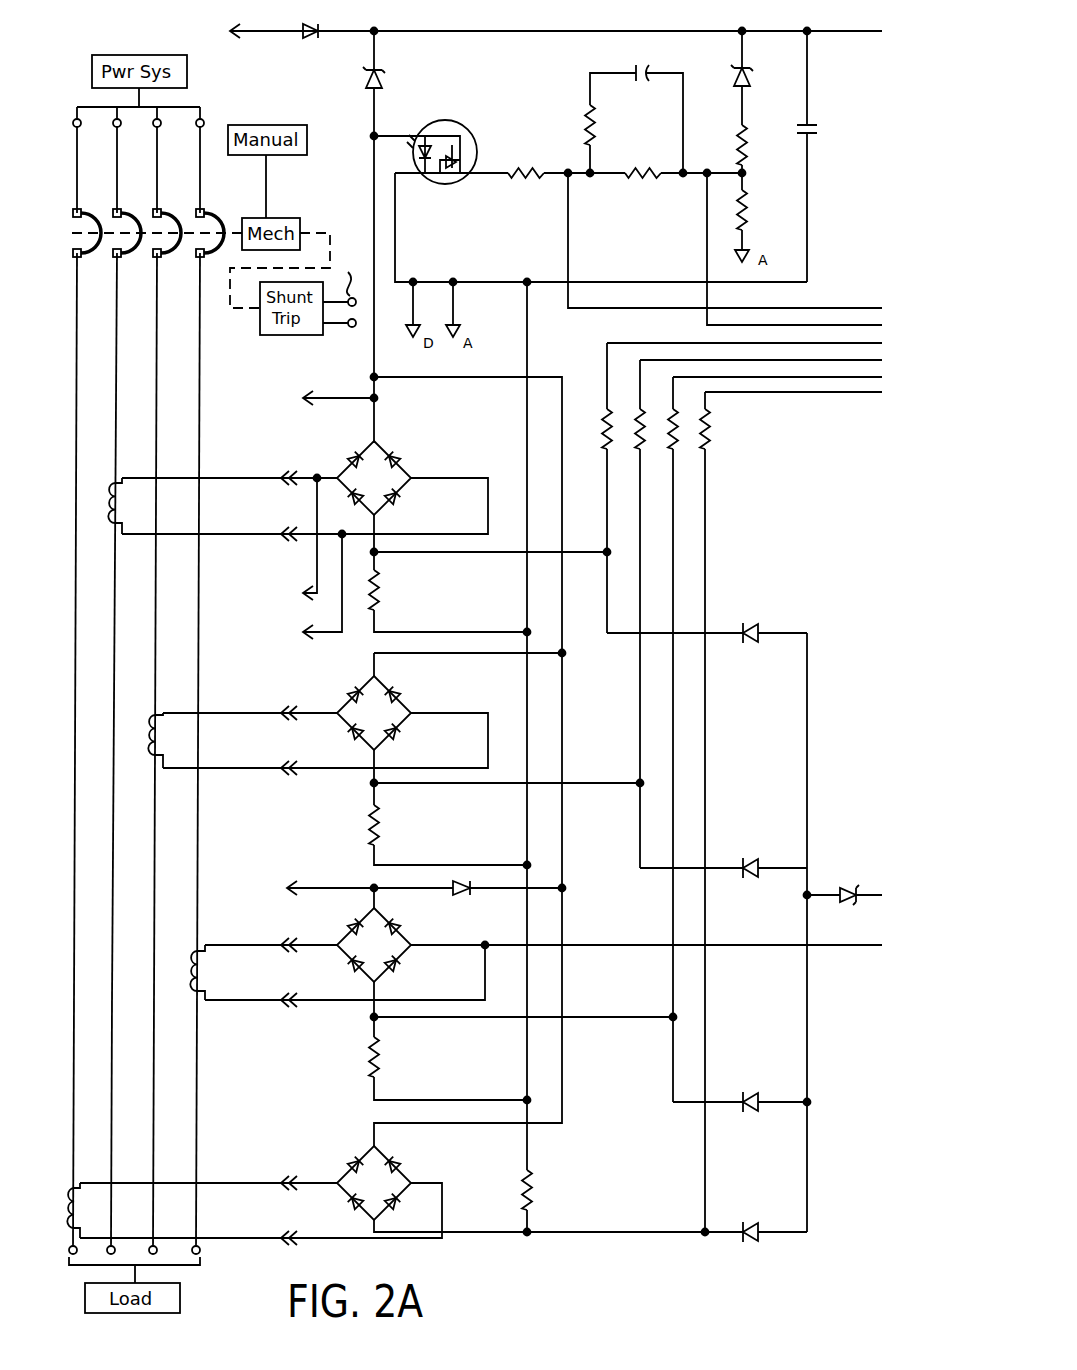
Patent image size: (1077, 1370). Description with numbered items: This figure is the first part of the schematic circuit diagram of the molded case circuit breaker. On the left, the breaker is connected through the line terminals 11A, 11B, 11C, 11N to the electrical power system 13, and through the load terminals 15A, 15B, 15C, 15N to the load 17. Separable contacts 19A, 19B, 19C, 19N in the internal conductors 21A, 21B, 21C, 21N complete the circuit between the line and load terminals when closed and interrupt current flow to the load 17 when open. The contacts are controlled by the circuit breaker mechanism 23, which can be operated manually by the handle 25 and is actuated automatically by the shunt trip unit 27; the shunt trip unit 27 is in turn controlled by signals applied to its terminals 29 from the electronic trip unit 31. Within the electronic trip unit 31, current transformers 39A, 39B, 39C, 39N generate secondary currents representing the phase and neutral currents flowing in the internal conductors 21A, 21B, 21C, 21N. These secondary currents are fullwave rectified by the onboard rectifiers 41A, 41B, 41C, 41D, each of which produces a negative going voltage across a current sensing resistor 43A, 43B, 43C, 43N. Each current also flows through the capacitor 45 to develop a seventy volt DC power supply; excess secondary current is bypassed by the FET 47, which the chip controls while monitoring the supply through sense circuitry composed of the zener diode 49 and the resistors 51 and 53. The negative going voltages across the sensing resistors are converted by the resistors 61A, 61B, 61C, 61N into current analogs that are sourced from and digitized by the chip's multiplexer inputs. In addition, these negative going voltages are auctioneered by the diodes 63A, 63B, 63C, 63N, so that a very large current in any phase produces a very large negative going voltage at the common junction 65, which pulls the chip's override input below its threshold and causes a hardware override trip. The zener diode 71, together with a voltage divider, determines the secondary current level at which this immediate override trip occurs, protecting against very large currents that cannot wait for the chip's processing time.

The electrical power system 13 is at (156, 55).
The neutral line terminal 11N is at (80, 130).
The phase A line terminal 11A is at (120, 130).
The phase B line terminal 11B is at (160, 130).
The phase C line terminal 11C is at (205, 118).
The neutral separable contacts 19N is at (95, 256).
The phase A separable contacts 19A is at (135, 256).
The phase B separable contacts 19B is at (175, 256).
The phase C separable contacts 19C is at (215, 210).
The neutral internal conductor 21N is at (77, 393).
The phase A internal conductor 21A is at (117, 405).
The phase B internal conductor 21B is at (157, 397).
The phase C internal conductor 21C is at (199, 400).
The circuit breaker mechanism 23 is at (282, 218).
The handle 25 is at (275, 125).
The shunt trip unit 27 is at (283, 335).
The terminals 29 is at (353, 272).
The neutral load terminal 15N is at (80, 1247).
The phase A load terminal 15A is at (113, 1246).
The phase B load terminal 15B is at (155, 1246).
The phase C load terminal 15C is at (200, 1250).
The load 17 is at (180, 1300).
The phase A current transformer 39A is at (112, 505).
The phase B current transformer 39B is at (160, 712).
The phase C current transformer 39C is at (200, 950).
The neutral current transformer 39N is at (78, 1190).
The phase A rectifier 41A is at (356, 455).
The phase B rectifier 41B is at (360, 682).
The phase C rectifier 41C is at (356, 925).
The neutral rectifier 41D is at (360, 1150).
The phase A current sensing resistor 43A is at (380, 603).
The phase B current sensing resistor 43B is at (380, 820).
The phase C current sensing resistor 43C is at (375, 1060).
The neutral current sensing resistor 43N is at (533, 1195).
The capacitor 45 is at (820, 130).
The FET 47 is at (462, 125).
The zener diode 49 is at (752, 70).
The resistor 51 is at (748, 140).
The resistor 53 is at (748, 212).
The phase A resistor 61A is at (605, 425).
The phase B resistor 61B is at (640, 450).
The phase C resistor 61C is at (675, 440).
The neutral resistor 61N is at (712, 425).
The electronic trip unit 31 is at (787, 553).
The phase A diode 63A is at (757, 622).
The phase B diode 63B is at (752, 862).
The phase C diode 63C is at (752, 1095).
The neutral diode 63N is at (752, 1225).
The common junction 65 is at (807, 895).
The zener diode 71 is at (855, 903).